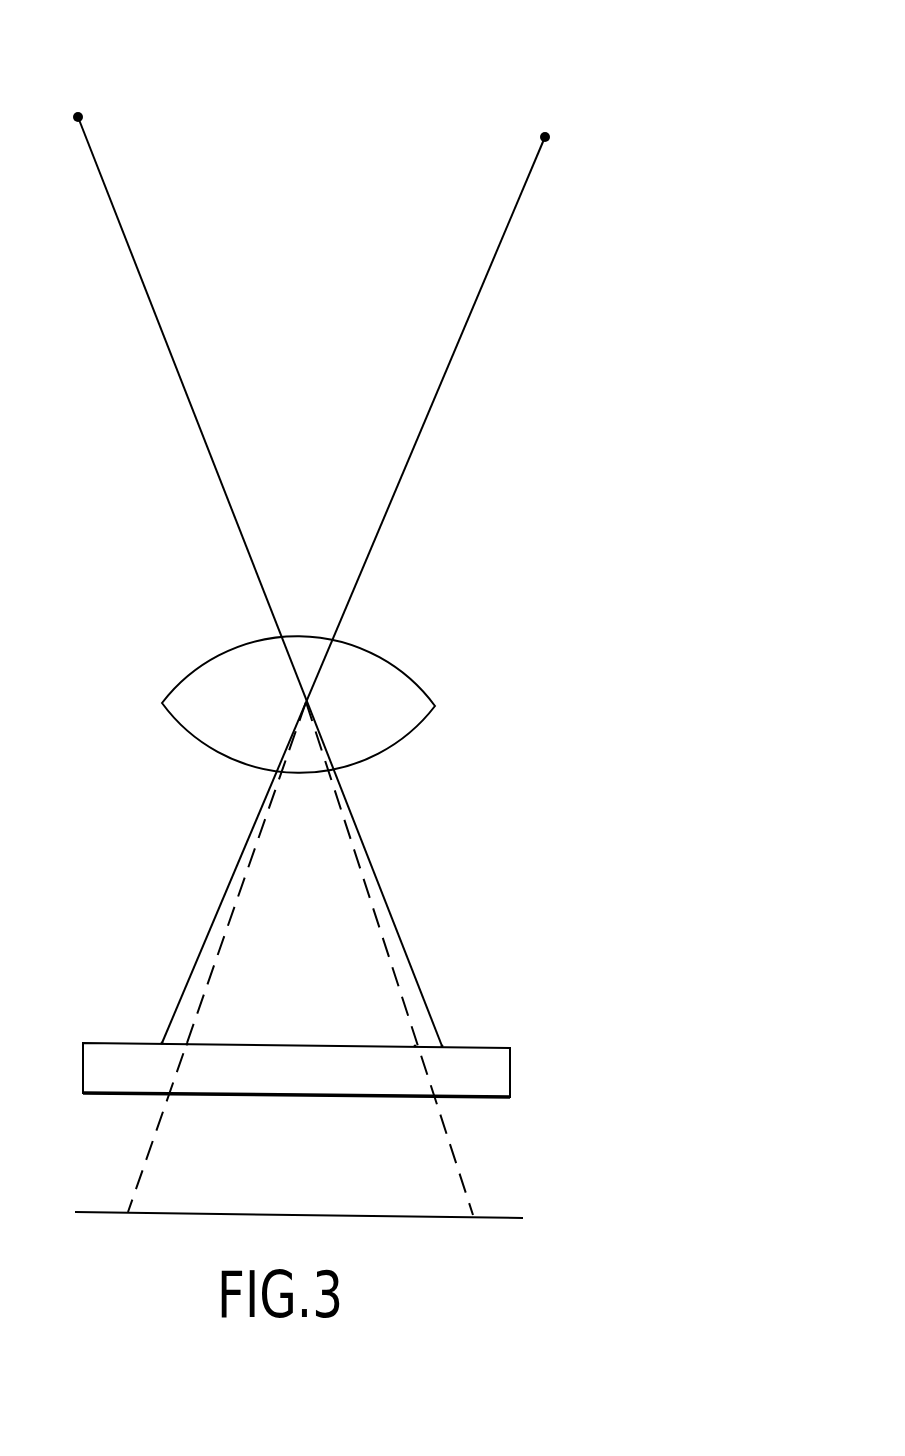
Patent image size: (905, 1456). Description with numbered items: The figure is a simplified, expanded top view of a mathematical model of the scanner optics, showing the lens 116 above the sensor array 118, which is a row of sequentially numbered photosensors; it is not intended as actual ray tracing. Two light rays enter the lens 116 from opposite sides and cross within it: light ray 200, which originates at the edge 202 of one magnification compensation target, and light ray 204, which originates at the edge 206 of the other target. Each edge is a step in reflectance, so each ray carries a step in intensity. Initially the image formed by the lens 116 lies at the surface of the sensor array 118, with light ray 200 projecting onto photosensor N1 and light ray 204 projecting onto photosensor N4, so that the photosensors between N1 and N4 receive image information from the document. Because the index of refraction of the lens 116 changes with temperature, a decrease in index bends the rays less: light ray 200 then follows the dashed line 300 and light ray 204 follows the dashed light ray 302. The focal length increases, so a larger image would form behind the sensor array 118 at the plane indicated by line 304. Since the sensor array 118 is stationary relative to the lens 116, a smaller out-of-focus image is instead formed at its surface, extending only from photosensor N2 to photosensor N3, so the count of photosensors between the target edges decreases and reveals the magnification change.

The lens 116 is at (410, 680).
The sensor array 118 is at (510, 1070).
The light ray 200 is at (462, 338).
The edge 202 is at (545, 137).
The light ray 204 is at (175, 368).
The edge 206 is at (78, 117).
The line 300 is at (235, 905).
The light ray 302 is at (392, 965).
The line 304 is at (500, 1218).
The photosensor N1 is at (162, 1043).
The photosensor N2 is at (187, 1044).
The photosensor N3 is at (415, 1046).
The photosensor N4 is at (442, 1046).